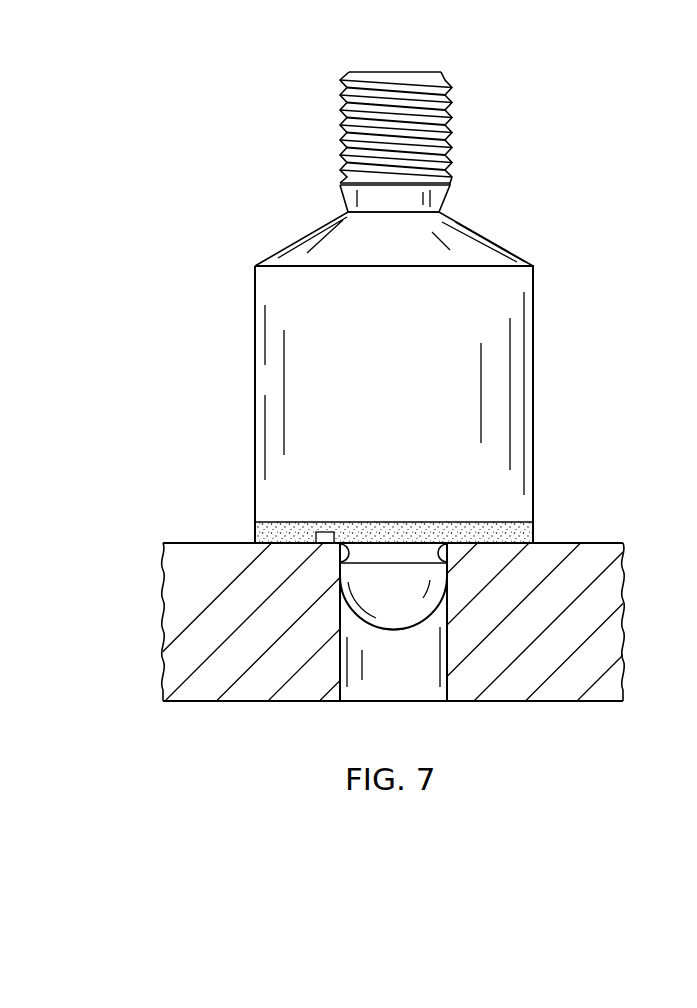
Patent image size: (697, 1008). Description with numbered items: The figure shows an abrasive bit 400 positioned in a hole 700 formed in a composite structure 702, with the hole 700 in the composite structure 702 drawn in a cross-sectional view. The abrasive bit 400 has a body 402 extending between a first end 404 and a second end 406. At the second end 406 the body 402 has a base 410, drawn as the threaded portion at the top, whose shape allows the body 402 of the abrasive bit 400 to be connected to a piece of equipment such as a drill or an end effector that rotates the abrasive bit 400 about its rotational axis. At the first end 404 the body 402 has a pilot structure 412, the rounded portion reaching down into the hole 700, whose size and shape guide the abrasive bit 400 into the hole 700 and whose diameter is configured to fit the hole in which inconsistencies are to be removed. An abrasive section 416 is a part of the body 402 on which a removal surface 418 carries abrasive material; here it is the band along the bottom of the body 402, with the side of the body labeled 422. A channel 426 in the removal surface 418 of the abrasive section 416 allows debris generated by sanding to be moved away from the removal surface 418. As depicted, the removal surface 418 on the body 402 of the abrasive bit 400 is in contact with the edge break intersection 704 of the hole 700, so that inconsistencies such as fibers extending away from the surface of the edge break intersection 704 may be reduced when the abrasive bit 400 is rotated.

The abrasive bit 400 is at (540, 118).
The body 402 is at (534, 393).
The first end 404 is at (394, 632).
The second end 406 is at (393, 72).
The base 410 is at (341, 116).
The pilot structure 412 is at (372, 622).
The abrasive section 416 is at (483, 530).
The removal surface 418 is at (534, 543).
The side wall 422 is at (262, 383).
The channel 426 is at (328, 531).
The hole 700 is at (372, 703).
The composite structure 702 is at (622, 636).
The edge break intersection 704 is at (338, 555).